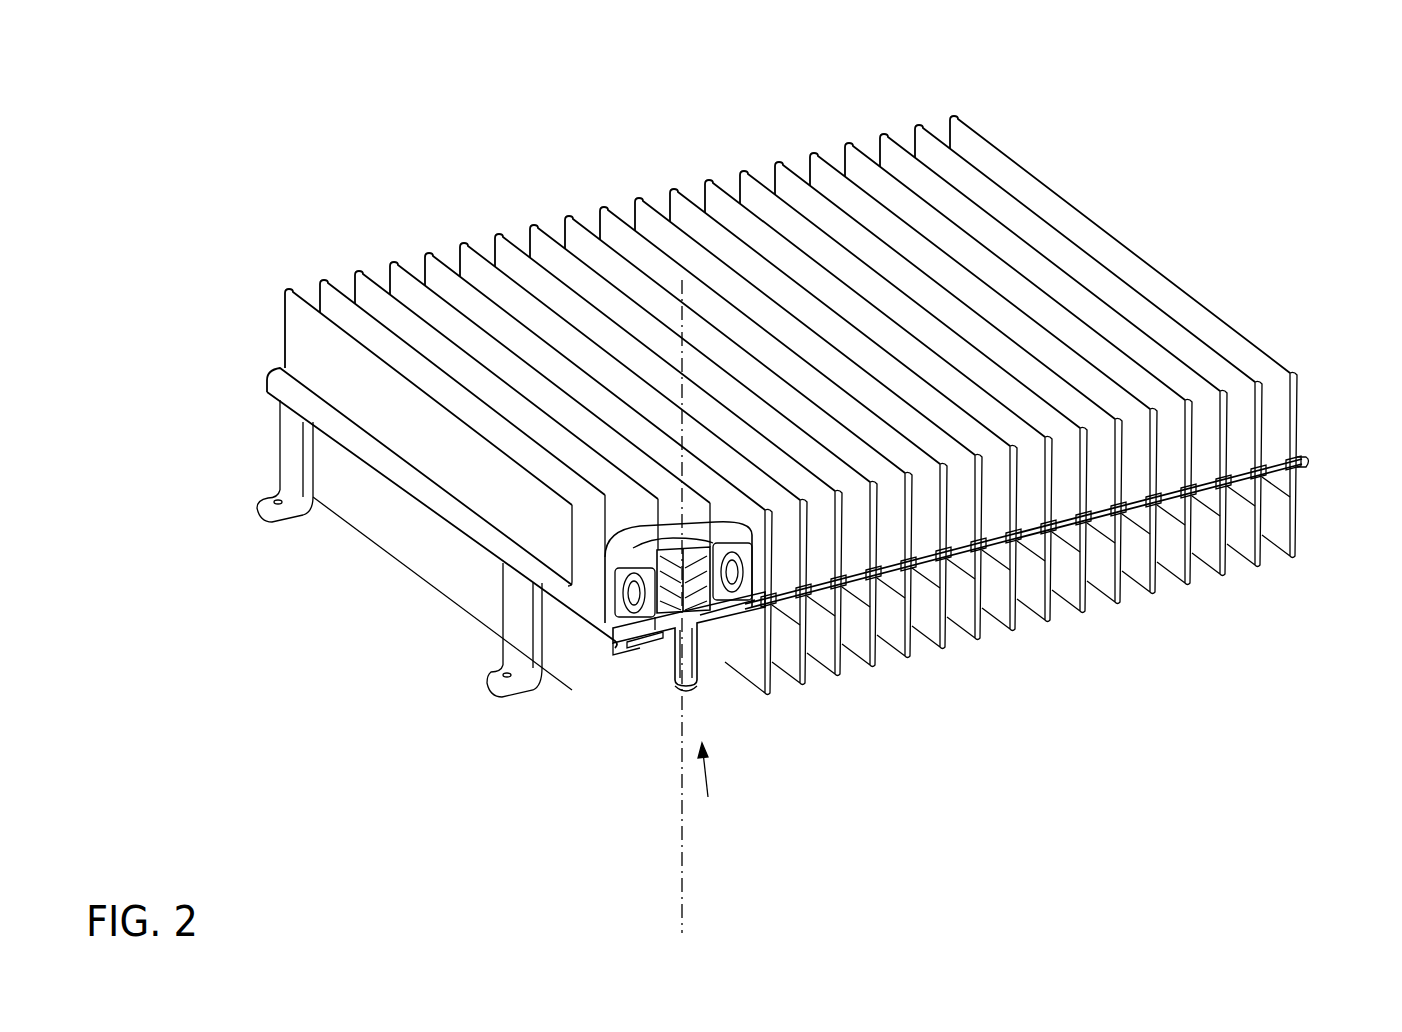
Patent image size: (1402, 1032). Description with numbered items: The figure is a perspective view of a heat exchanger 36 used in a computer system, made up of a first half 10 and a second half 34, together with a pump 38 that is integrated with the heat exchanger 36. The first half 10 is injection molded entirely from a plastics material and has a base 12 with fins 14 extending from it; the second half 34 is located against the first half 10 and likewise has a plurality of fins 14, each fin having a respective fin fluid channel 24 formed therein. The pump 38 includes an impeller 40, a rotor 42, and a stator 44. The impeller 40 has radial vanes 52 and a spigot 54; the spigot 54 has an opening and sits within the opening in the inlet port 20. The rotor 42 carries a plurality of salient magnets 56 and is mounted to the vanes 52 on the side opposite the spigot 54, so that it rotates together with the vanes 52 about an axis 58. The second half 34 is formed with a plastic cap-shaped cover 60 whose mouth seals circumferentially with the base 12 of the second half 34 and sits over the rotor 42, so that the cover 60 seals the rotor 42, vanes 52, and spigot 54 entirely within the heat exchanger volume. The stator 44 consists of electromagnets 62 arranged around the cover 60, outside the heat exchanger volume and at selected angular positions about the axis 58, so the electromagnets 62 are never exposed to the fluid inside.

The first half 10 is at (975, 678).
The base 12 is at (578, 588).
The fins 14 is at (872, 150).
The inlet port 20 is at (712, 688).
The fin fluid channel 24 is at (1255, 445).
The second half 34 is at (1152, 212).
The heat exchanger 36 is at (449, 130).
The pump 38 is at (713, 785).
The impeller 40 is at (722, 632).
The rotor 42 is at (618, 640).
The stator 44 is at (622, 610).
The radial vanes 52 is at (648, 640).
The spigot 54 is at (680, 665).
The salient magnets 56 is at (672, 630).
The axis 58 is at (662, 606).
The cap-shaped cover 60 is at (690, 546).
The electromagnets 62 is at (637, 567).